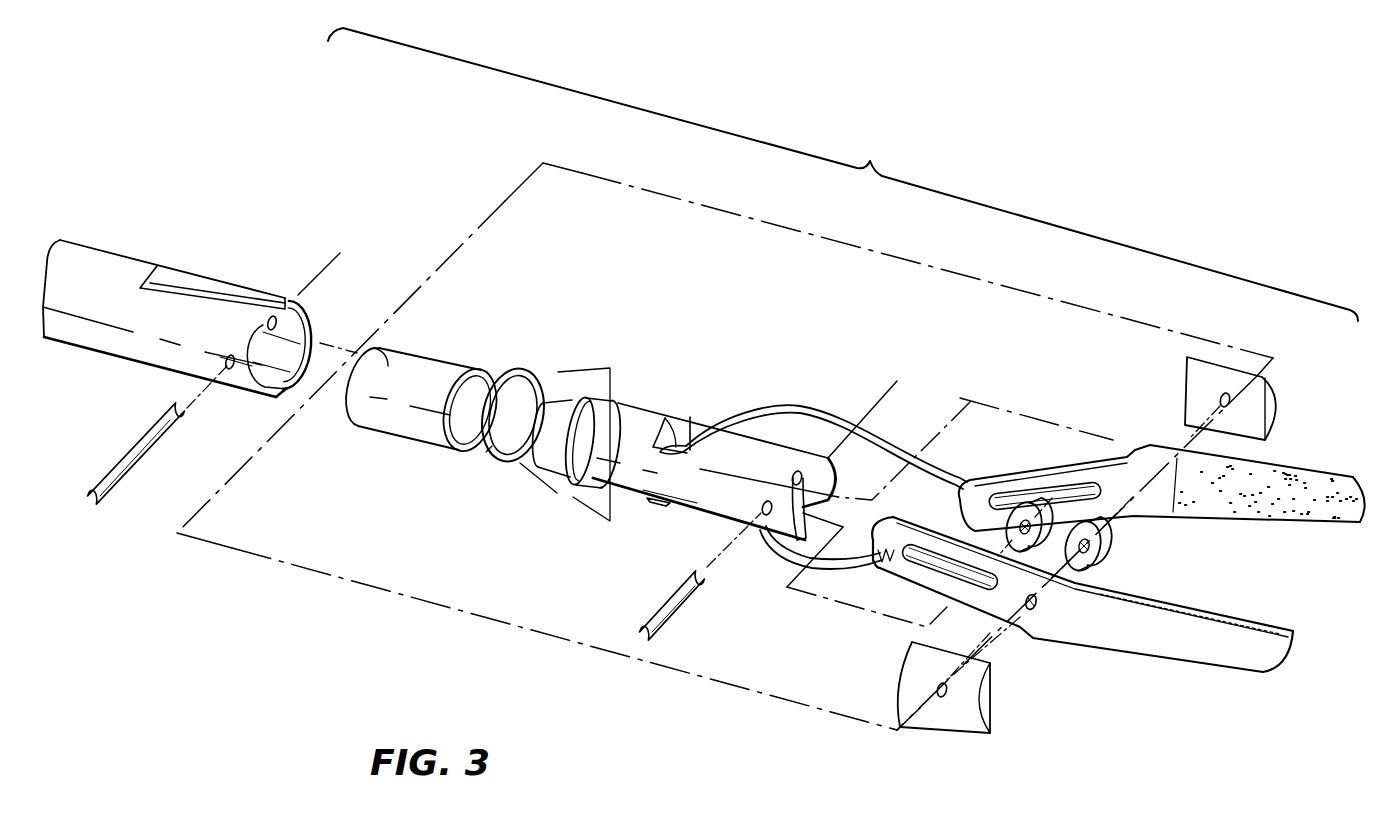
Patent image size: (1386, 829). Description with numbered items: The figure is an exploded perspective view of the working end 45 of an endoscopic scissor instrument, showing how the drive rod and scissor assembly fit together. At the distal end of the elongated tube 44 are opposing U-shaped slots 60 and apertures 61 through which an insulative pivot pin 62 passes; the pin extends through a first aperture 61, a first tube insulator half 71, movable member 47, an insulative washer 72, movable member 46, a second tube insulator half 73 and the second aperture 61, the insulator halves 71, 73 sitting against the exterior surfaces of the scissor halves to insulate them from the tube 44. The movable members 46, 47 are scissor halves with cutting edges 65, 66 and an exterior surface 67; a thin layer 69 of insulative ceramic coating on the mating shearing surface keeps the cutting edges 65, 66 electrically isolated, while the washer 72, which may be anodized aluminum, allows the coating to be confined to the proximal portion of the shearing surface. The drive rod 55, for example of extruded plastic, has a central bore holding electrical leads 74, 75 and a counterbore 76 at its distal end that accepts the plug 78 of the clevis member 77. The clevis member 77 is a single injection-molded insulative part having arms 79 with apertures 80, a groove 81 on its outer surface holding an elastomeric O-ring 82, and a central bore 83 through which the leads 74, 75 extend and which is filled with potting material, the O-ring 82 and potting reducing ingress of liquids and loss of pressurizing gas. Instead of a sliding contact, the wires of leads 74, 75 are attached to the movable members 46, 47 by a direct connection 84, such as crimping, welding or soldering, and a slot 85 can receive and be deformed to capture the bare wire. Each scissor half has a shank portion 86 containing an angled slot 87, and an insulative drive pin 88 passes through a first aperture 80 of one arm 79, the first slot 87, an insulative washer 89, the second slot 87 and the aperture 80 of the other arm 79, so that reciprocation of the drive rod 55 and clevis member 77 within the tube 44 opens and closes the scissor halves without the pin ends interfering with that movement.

The elongated tube 44 is at (113, 253).
The working end 45 is at (843, 174).
The movable member 46 is at (1292, 468).
The movable member 47 is at (1103, 652).
The drive rod 55 is at (420, 341).
The U-shaped slot 60 is at (203, 268).
The aperture 61 is at (224, 364).
The insulative pivot pin 62 is at (107, 495).
The cutting edge 65 is at (1325, 523).
The cutting edge 66 is at (1268, 628).
The exterior surface 67 is at (1210, 660).
The layer of insulative coating 69 is at (1240, 500).
The tube insulator half 71 is at (960, 727).
The insulative washer 72 is at (1114, 552).
The tube insulator half 73 is at (1283, 380).
The electrical lead 74 is at (776, 556).
The electrical lead 75 is at (797, 411).
The counterbore 76 is at (489, 372).
The clevis member 77 is at (642, 402).
The plug 78 is at (566, 376).
The arm 79 is at (672, 498).
The aperture 80 is at (758, 510).
The groove 81 is at (561, 497).
The O-ring 82 is at (487, 455).
The central bore 83 is at (700, 438).
The direct connection 84 is at (860, 598).
The slot 85 is at (820, 590).
The shank portion 86 is at (923, 582).
The angled slot 87 is at (1020, 605).
The insulative drive pin 88 is at (646, 625).
The insulative washer 89 is at (1027, 516).